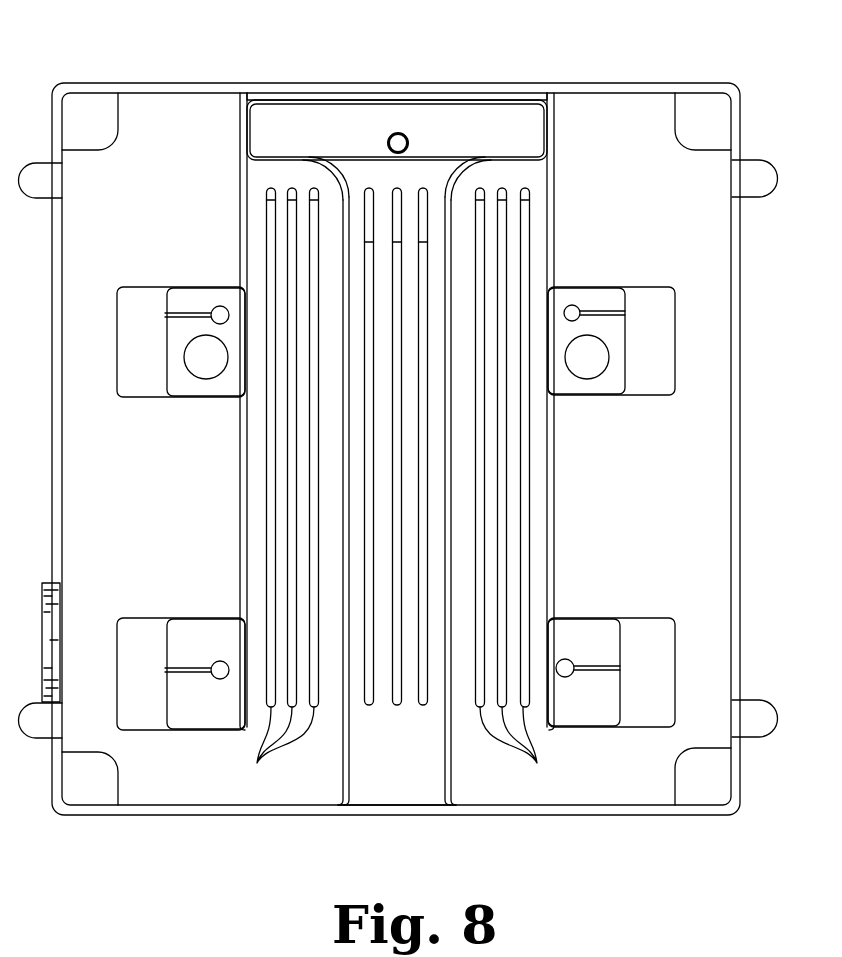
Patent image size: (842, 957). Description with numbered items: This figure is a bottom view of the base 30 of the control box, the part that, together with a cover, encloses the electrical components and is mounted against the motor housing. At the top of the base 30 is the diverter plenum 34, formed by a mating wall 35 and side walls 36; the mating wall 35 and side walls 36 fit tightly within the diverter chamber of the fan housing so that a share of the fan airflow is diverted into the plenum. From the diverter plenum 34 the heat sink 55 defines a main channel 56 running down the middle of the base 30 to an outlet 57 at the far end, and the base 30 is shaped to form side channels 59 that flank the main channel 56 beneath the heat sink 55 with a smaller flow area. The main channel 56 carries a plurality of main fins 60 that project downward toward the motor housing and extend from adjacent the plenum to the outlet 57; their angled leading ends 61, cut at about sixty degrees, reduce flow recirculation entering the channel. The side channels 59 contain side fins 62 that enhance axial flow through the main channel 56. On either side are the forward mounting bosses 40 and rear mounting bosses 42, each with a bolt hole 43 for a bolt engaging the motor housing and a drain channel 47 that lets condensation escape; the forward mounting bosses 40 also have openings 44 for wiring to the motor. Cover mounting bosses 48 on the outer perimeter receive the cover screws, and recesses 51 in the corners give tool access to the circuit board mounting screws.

The base 30 is at (735, 405).
The diverter plenum 34 is at (448, 125).
The mating wall 35 is at (320, 95).
The side walls 36 is at (241, 127).
The forward mounting bosses 40 is at (650, 333).
The rear mounting bosses 42 is at (655, 663).
The bolt hole 43 is at (572, 305).
The openings 44 is at (205, 363).
The drain channel 47 is at (183, 672).
The cover mounting bosses 48 is at (758, 175).
The recesses 51 is at (680, 130).
The heat sink 55 is at (435, 240).
The main channel 56 is at (355, 683).
The outlet 57 is at (400, 782).
The side channels 59 is at (285, 172).
The main fins 60 is at (425, 315).
The angled leading ends 61 is at (423, 212).
The side fins 62 is at (394, 748).